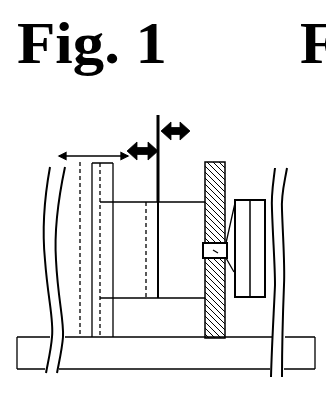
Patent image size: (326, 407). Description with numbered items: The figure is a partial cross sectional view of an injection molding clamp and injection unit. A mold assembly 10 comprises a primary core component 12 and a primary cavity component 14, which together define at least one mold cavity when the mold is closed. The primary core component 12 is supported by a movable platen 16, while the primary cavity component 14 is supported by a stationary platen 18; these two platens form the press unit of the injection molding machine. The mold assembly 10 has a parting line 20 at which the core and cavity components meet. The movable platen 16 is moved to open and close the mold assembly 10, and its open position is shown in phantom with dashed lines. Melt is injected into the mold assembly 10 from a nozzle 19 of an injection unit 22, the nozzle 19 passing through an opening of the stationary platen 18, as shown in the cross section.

The mold assembly 10 is at (178, 159).
The primary core component 12 is at (153, 286).
The primary cavity component 14 is at (170, 283).
The movable platen 16 is at (112, 167).
The stationary platen 18 is at (226, 162).
The nozzle 19 is at (226, 202).
The parting line 20 is at (157, 115).
The injection unit 22 is at (257, 278).